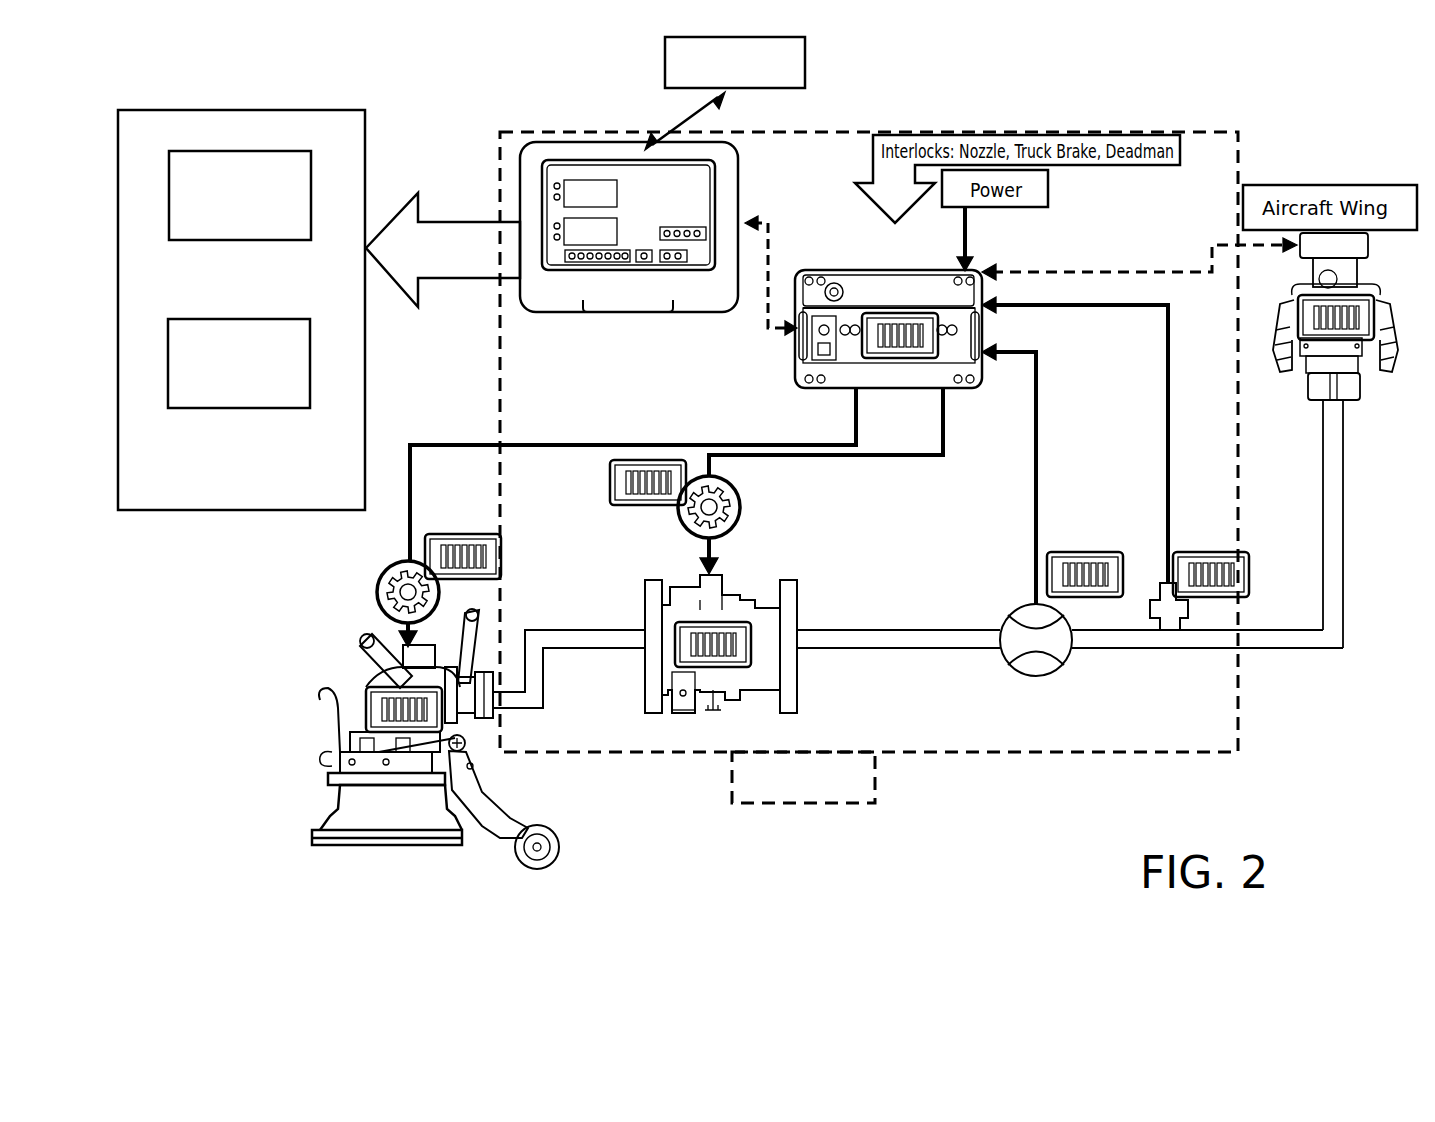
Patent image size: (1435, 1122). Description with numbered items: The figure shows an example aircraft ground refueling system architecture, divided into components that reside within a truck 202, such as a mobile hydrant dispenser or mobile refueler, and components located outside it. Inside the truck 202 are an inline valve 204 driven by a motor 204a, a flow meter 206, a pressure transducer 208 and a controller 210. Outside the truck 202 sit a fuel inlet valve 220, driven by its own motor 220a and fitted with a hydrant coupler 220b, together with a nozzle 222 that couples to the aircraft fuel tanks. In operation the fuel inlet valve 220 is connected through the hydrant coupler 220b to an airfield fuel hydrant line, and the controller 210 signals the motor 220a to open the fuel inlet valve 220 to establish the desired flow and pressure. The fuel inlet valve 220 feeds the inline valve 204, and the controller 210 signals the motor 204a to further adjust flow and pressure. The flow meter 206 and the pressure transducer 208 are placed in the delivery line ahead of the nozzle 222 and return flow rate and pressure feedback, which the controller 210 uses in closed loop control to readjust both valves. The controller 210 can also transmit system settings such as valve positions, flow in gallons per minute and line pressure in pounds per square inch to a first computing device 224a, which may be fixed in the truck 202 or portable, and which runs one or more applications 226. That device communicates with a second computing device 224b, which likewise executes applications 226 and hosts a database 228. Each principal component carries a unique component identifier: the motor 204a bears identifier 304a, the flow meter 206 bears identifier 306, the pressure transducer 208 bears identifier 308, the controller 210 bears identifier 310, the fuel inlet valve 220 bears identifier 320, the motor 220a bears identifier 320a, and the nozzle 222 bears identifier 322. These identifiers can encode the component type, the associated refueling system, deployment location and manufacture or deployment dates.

The truck 202 is at (818, 805).
The inline valve 204 is at (645, 608).
The motor 204a is at (733, 538).
The flow meter 206 is at (1012, 663).
The pressure transducer 208 is at (1173, 610).
The controller 210 is at (881, 331).
The fuel inlet valve 220 is at (413, 763).
The motor 220a is at (378, 611).
The hydrant coupler 220b is at (537, 856).
The nozzle 222 is at (1347, 440).
The first computing device 224a is at (538, 273).
The second computing device 224b is at (241, 310).
The applications 226 is at (487, 138).
The database 228 is at (239, 363).
The component identifier 304a is at (608, 486).
The component identifier 306 is at (1085, 540).
The component identifier 308 is at (1243, 573).
The component identifier 310 is at (922, 327).
The component identifier 320 is at (360, 715).
The component identifier 320a is at (485, 555).
The component identifier 322 is at (1380, 327).